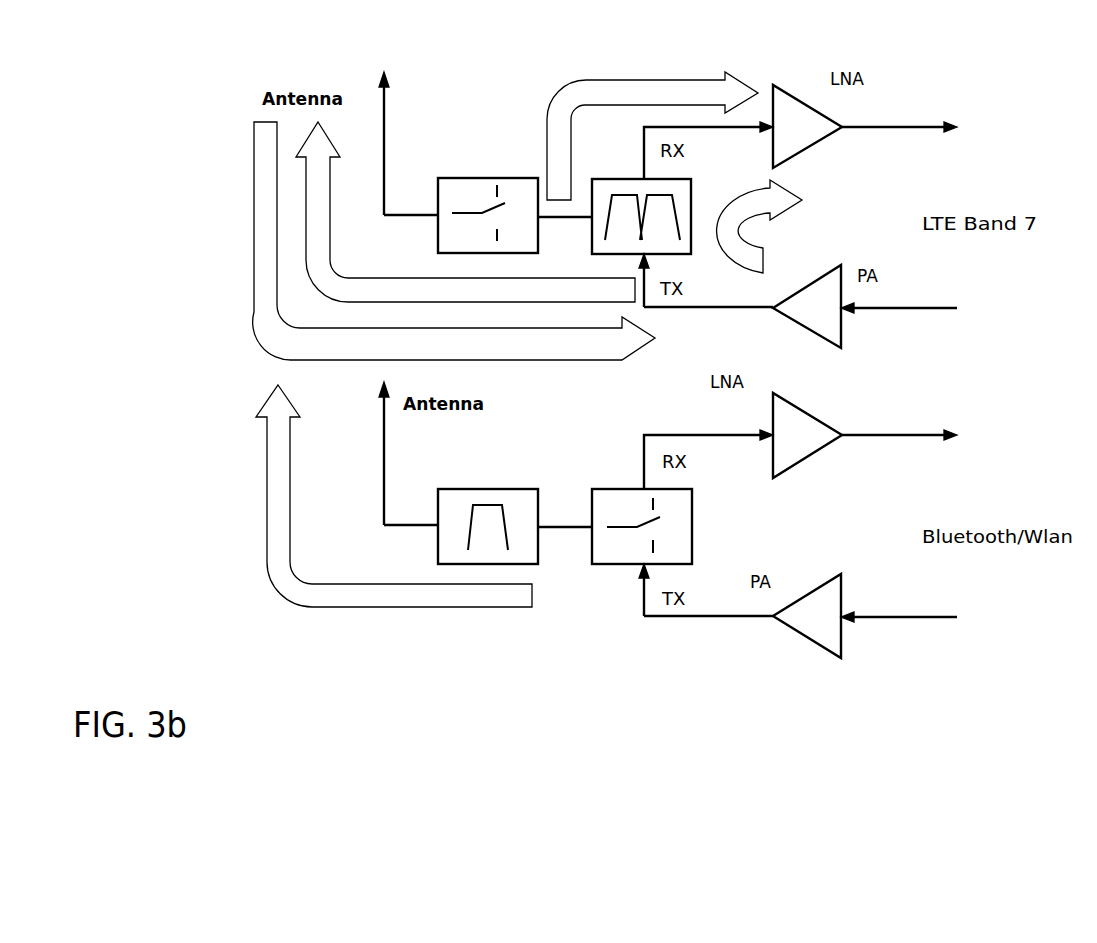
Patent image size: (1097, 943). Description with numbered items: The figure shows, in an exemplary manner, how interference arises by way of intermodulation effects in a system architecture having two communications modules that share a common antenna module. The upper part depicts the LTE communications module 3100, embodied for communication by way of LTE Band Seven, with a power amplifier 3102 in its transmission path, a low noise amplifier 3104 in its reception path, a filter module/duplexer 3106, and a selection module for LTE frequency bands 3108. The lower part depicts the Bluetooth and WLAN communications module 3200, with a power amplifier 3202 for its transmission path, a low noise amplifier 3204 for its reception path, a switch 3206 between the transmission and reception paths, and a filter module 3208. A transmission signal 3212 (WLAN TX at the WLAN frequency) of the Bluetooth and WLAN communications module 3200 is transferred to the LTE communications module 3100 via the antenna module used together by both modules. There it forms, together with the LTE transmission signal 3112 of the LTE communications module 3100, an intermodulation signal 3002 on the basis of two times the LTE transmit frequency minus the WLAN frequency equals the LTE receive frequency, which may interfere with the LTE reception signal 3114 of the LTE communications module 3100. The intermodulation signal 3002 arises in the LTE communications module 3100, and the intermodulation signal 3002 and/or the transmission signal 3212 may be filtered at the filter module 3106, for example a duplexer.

The LTE communications module 3100 is at (220, 222).
The power amplifier 3102 is at (841, 333).
The low noise amplifier 3104 is at (818, 140).
The filter module/duplexer 3106 is at (607, 179).
The selection module for LTE frequency bands 3108 is at (450, 177).
The transmission signal LTE7 TX ftx7 3112 is at (427, 278).
The reception signal LTE7 RX frx7 3114 is at (644, 80).
The intermodulation signal 3002 is at (728, 228).
The Bluetooth and WLAN communications module 3200 is at (220, 588).
The power amplifier 3202 is at (840, 643).
The low noise amplifier 3204 is at (818, 448).
The switch 3206 is at (692, 529).
The filter module 3208 is at (493, 488).
The transmission signal WLAN TX fWLAN 3212 is at (588, 350).